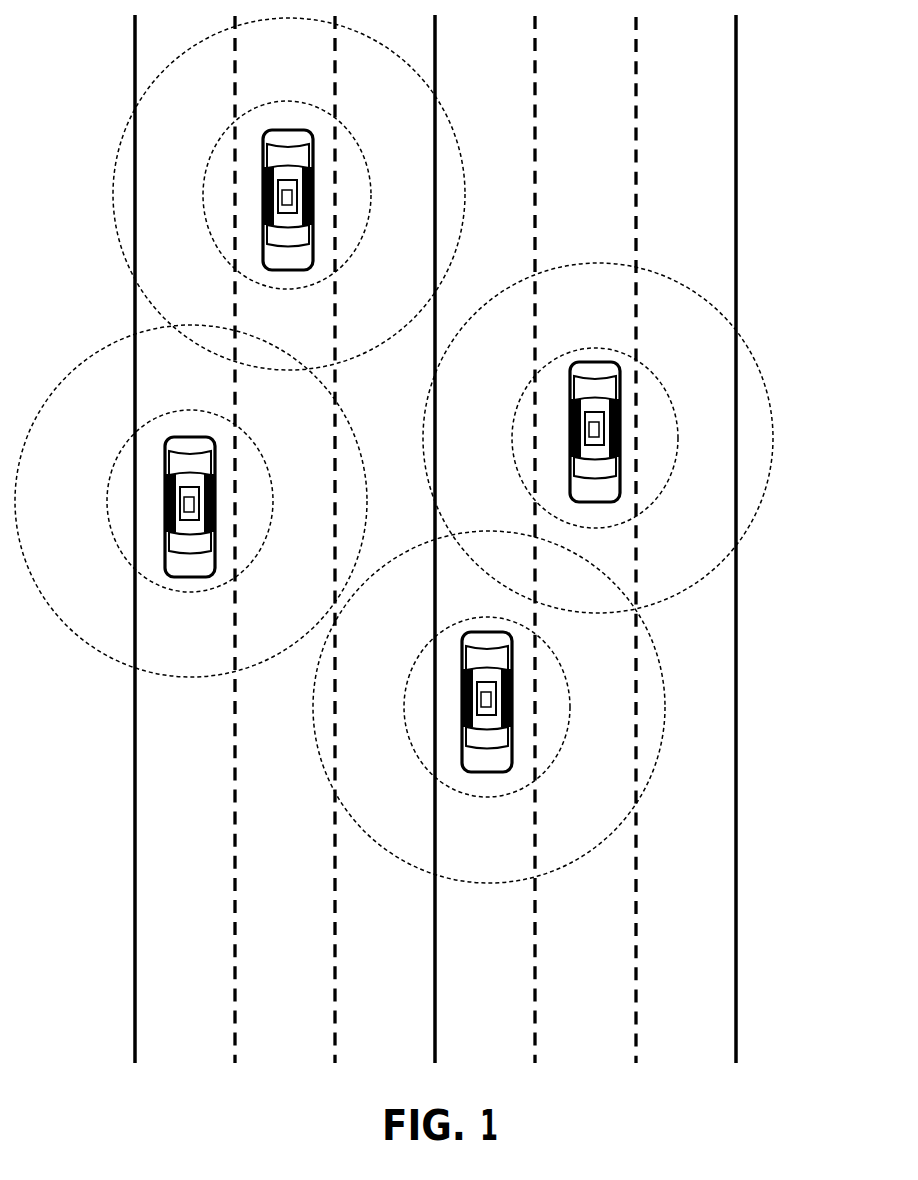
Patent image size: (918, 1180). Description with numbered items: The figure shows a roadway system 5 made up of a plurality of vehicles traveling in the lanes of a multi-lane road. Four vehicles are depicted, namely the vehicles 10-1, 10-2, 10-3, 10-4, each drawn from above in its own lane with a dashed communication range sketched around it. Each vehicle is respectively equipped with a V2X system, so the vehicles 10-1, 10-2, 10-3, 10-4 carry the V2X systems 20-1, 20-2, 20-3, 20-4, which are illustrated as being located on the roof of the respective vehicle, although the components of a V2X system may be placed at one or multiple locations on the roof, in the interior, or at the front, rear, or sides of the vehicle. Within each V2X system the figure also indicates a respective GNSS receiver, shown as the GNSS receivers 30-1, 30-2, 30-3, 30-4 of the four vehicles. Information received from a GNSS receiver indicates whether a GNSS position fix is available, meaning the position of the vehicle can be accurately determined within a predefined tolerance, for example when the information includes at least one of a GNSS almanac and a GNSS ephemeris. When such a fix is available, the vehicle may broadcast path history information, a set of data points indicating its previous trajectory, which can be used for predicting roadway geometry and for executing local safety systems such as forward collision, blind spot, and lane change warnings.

The roadway system 5 is at (802, 100).
The vehicle 10-1 is at (313, 138).
The V2X system 20-1 is at (313, 166).
The GNSS receiver 30-1 is at (293, 193).
The vehicle 10-2 is at (217, 445).
The V2X system 20-2 is at (217, 472).
The GNSS receiver 30-2 is at (196, 499).
The vehicle 10-3 is at (620, 383).
The V2X system 20-3 is at (621, 412).
The GNSS receiver 30-3 is at (600, 435).
The vehicle 10-4 is at (511, 652).
The V2X system 20-4 is at (513, 680).
The GNSS receiver 30-4 is at (491, 706).